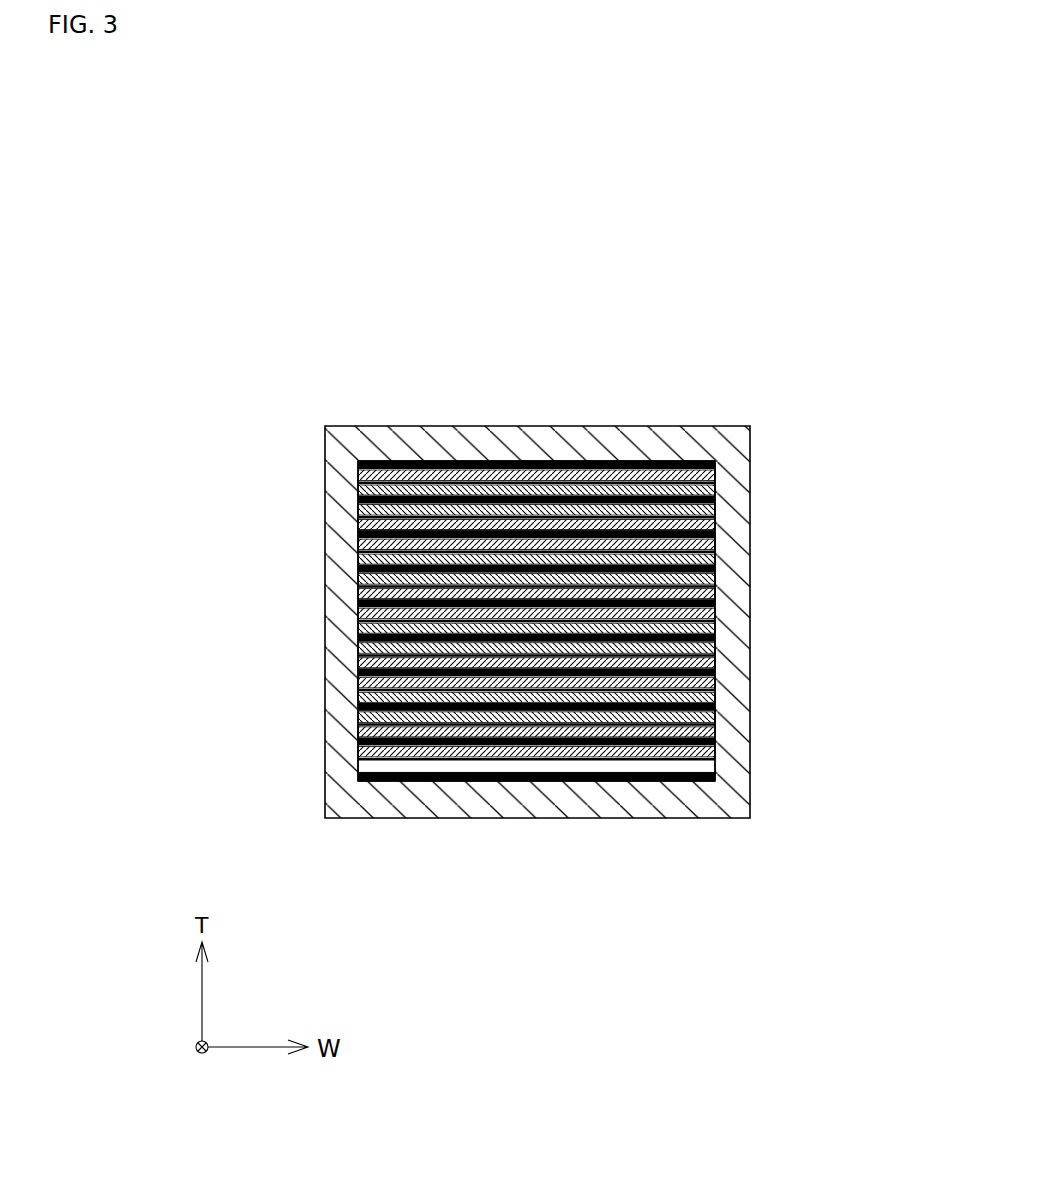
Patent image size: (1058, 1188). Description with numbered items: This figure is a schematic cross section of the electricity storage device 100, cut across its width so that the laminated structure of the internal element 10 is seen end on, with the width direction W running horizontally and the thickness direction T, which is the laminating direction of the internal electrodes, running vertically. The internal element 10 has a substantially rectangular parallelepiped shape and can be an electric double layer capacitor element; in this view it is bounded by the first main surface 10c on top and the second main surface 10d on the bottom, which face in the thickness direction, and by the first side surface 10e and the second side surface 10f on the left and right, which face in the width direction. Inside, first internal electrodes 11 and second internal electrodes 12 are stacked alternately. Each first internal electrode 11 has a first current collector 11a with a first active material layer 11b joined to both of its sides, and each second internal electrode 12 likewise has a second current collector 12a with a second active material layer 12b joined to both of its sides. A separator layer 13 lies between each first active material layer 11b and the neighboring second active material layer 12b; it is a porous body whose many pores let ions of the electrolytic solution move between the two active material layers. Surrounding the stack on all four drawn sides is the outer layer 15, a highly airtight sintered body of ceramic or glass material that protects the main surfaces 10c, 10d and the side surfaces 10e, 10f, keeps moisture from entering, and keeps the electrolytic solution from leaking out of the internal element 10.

The electricity storage device 100 is at (638, 328).
The internal element 10 is at (425, 458).
The first main surface 10c is at (510, 457).
The second main surface 10d is at (497, 784).
The first side surface 10e is at (358, 607).
The second side surface 10f is at (720, 611).
The first internal electrode 11 is at (443, 743).
The first current collector 11a is at (358, 741).
The first active material layer 11b is at (358, 729).
The second internal electrode 12 is at (629, 502).
The second current collector 12a is at (715, 500).
The second active material layer 12b is at (715, 484).
The separator layer 13 is at (715, 551).
The outer layer 15 is at (652, 432).